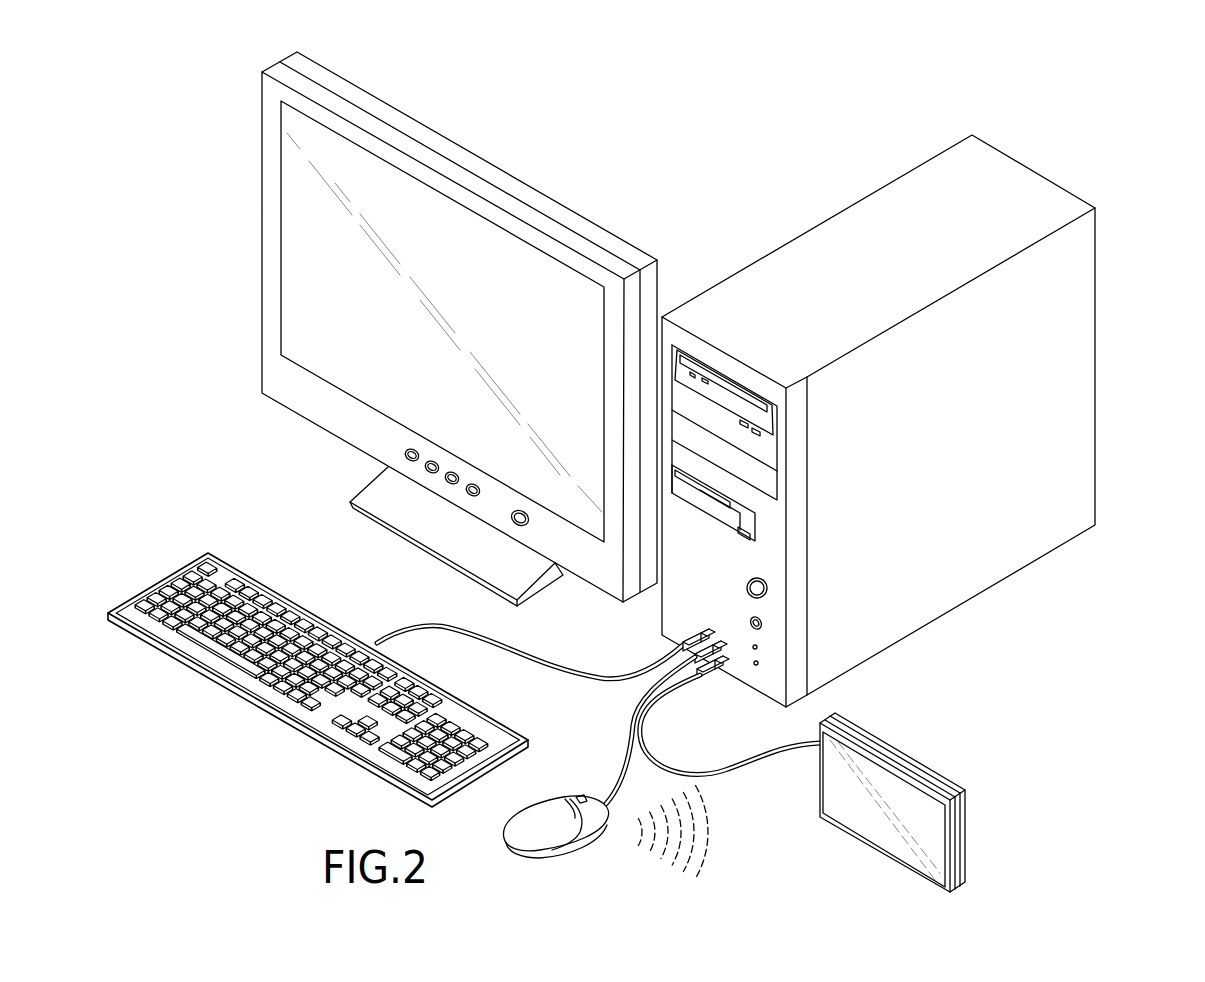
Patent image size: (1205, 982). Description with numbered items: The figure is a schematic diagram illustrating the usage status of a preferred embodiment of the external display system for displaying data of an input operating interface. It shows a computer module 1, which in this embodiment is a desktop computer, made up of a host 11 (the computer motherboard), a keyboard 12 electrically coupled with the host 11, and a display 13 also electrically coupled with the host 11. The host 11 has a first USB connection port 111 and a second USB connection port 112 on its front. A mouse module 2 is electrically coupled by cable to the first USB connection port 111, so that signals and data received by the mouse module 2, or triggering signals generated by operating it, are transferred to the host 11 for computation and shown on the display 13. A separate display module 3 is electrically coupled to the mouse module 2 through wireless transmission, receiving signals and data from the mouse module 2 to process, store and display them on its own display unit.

The computer module 1 is at (1073, 157).
The host 11 is at (848, 230).
The keyboard 12 is at (162, 583).
The display 13 is at (272, 222).
The first USB connection port 111 is at (728, 668).
The second USB connection port 112 is at (727, 650).
The mouse module 2 is at (547, 807).
The display module 3 is at (893, 750).